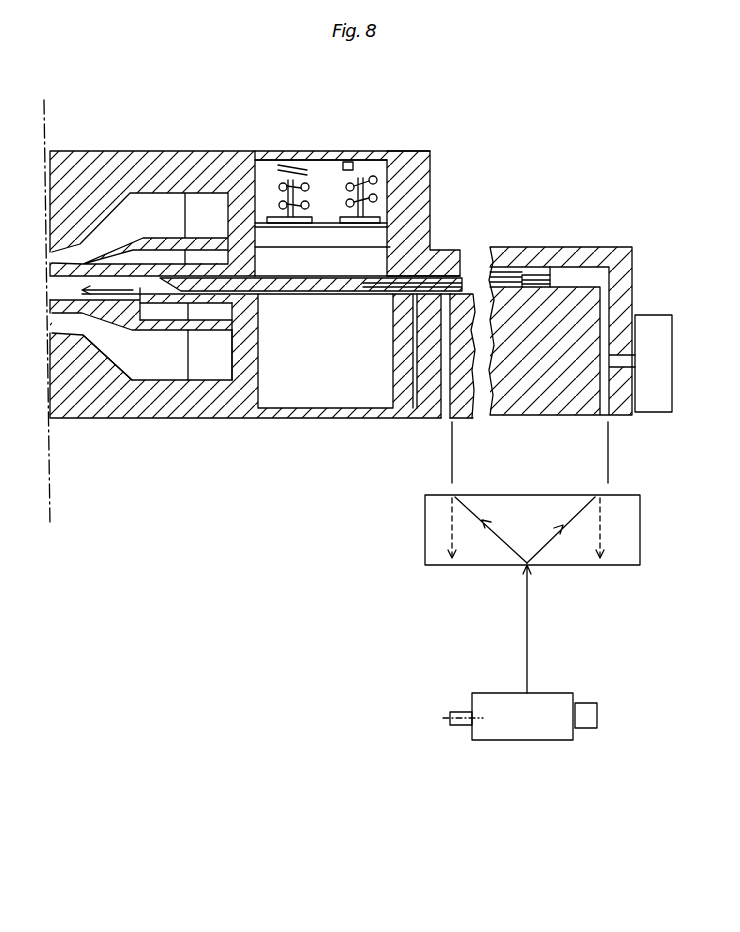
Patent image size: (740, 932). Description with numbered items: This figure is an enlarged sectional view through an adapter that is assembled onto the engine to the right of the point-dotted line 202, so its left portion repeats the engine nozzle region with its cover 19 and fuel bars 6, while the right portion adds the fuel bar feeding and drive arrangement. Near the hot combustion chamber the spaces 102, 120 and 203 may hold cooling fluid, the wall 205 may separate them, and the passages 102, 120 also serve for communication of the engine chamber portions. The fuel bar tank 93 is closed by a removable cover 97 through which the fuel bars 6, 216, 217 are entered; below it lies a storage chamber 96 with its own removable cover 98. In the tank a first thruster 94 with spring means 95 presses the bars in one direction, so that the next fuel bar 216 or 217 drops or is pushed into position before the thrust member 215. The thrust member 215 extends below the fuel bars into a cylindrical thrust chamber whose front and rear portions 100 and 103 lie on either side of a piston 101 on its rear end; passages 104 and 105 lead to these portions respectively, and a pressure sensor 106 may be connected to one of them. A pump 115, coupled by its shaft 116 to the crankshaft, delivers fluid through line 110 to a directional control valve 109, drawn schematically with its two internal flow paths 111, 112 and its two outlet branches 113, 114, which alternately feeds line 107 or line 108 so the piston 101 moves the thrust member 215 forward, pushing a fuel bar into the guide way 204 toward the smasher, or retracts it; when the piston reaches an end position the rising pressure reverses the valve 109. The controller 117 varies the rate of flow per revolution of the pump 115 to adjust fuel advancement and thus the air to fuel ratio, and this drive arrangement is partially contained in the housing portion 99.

The cover 19 is at (112, 167).
The point-dotted line 202 is at (77, 542).
The space 203 is at (67, 323).
The wall 205 is at (155, 325).
The fuel bar 6 is at (132, 377).
The passage 120 is at (208, 368).
The guide way 204 is at (220, 313).
The passage 102 is at (240, 320).
The fuel bar tank 93 is at (263, 192).
The removable cover 97 is at (378, 155).
The housing portion 99 is at (435, 173).
The first thruster 94 is at (318, 223).
The spring means 95 is at (353, 162).
The fuel bar 217 is at (325, 237).
The fuel bar 216 is at (280, 262).
The thrust member 215 is at (502, 278).
The storage chamber 96 is at (292, 393).
The removable cover 98 is at (337, 413).
The passage 104 is at (445, 422).
The rear thrust chamber portion 103 is at (452, 248).
The passage 105 is at (603, 302).
The thrust chamber portion 100 is at (568, 275).
The piston 101 is at (537, 278).
The pressure sensor 106 is at (657, 403).
The line 107 is at (455, 452).
The line 108 is at (605, 452).
The directional control valve 109 is at (433, 530).
The valve path left 111 is at (503, 542).
The valve path right 112 is at (552, 537).
The left outlet 113 is at (443, 533).
The right outlet 114 is at (602, 530).
The line 110 is at (530, 627).
The pump 115 is at (497, 738).
The shaft 116 is at (457, 727).
The controller 117 is at (587, 730).